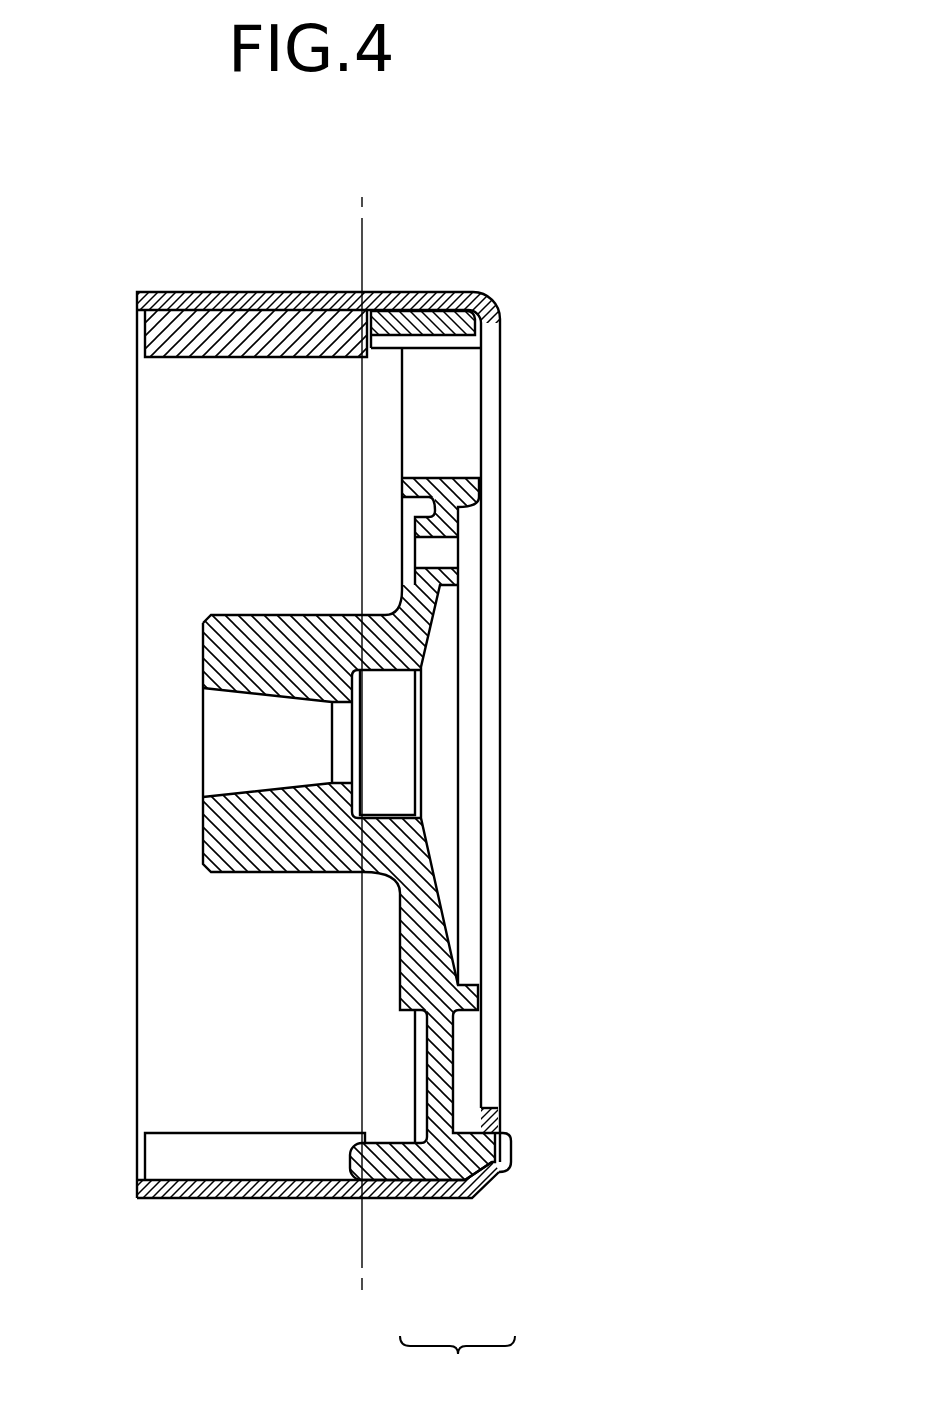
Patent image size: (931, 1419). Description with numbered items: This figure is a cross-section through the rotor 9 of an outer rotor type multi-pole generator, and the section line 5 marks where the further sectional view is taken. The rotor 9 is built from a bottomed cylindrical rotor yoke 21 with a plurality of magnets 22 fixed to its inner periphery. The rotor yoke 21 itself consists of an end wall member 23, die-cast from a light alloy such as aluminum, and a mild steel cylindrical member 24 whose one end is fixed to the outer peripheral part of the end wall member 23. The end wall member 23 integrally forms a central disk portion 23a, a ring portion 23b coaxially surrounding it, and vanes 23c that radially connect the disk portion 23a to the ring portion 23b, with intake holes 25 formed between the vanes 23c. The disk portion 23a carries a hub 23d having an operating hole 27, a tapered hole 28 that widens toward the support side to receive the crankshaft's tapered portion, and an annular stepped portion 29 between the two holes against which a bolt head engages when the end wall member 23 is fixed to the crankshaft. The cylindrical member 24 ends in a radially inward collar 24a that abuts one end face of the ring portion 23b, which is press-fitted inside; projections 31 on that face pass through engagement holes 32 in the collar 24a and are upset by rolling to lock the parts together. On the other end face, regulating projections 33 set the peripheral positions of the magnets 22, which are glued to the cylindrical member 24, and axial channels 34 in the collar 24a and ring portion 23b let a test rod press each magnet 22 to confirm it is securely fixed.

The line 5- 5 is at (348, 193).
The rotor 9 is at (427, 282).
The rotor yoke 21 is at (457, 1367).
The magnet 22 is at (250, 357).
The end wall member 23 is at (455, 1214).
The disk portion 23a is at (412, 940).
The ring portion 23b is at (478, 294).
The vane 23c is at (440, 1044).
The hub 23d is at (252, 638).
The cylindrical member 24 is at (404, 1200).
The collar 24a is at (502, 1132).
The intake hole 25 is at (447, 431).
The operating hole 27 is at (382, 672).
The tapered hole 28 is at (245, 793).
The annular stepped portion 29 is at (357, 803).
The projection 31 is at (500, 1175).
The engagement hole 32 is at (512, 1150).
The regulating projection 33 is at (333, 327).
The channel 34 is at (440, 324).